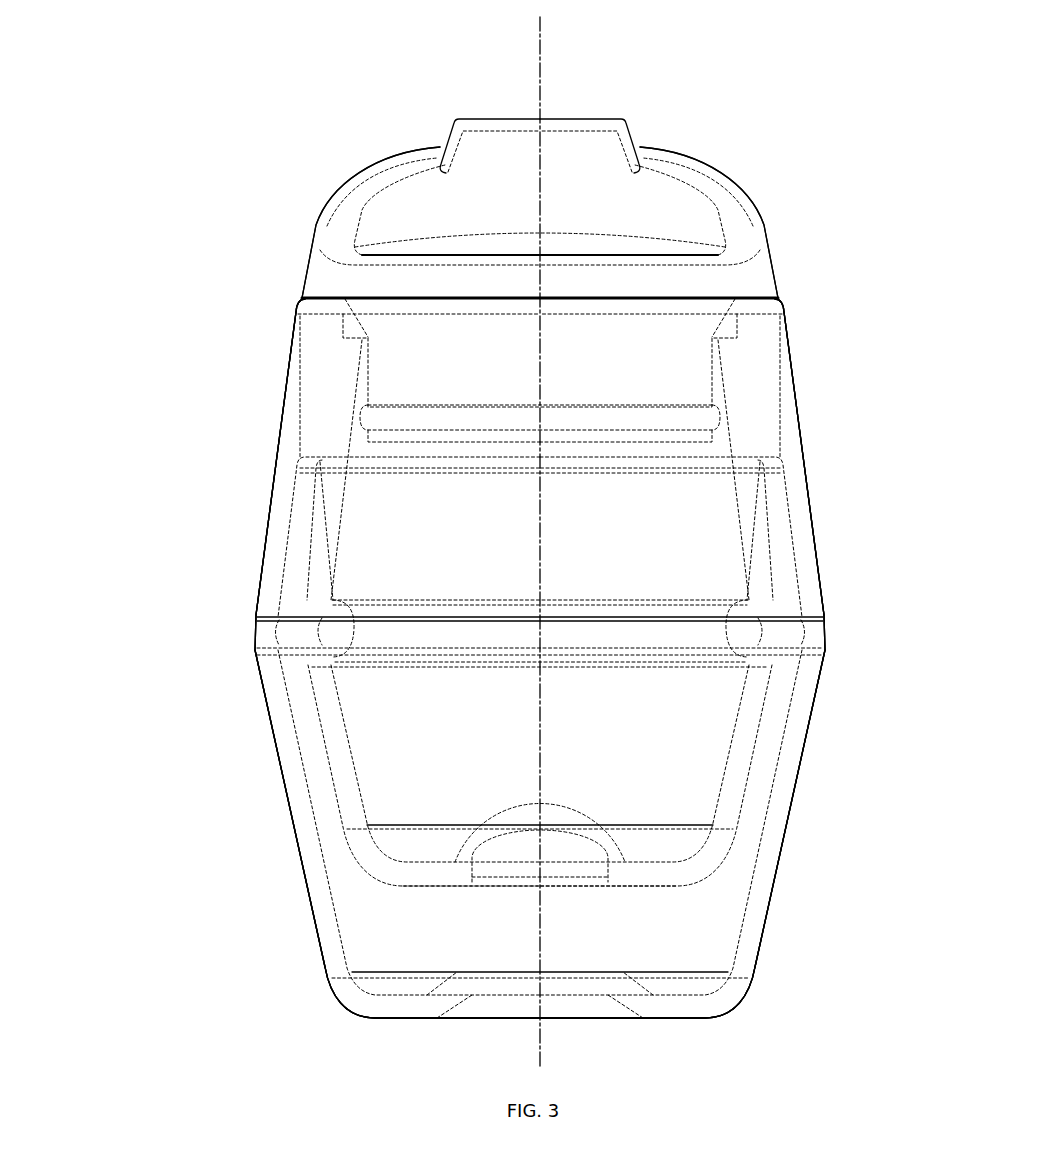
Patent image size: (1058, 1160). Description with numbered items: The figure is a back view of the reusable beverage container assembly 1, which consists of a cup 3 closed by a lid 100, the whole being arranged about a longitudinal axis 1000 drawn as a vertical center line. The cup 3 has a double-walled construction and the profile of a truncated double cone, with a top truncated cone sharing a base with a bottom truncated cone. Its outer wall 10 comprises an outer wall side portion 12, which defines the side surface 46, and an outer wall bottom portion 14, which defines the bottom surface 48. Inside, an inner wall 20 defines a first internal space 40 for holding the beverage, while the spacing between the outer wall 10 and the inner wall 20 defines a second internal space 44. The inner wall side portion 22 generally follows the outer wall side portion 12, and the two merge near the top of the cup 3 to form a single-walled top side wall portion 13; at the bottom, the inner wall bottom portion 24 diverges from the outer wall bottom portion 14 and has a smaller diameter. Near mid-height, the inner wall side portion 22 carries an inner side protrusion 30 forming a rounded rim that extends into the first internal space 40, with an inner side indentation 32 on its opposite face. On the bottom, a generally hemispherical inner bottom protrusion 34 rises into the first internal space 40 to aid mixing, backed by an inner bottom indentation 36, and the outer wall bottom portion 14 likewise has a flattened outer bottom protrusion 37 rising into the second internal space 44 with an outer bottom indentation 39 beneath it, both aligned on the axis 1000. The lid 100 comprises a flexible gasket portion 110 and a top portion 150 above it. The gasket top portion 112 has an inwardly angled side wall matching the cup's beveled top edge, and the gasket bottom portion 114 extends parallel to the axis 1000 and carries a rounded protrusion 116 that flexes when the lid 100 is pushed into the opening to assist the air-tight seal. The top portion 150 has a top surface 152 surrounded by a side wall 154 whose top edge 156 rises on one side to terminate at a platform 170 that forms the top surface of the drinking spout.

The longitudinal axis 1000 is at (540, 43).
The beverage container assembly 1 is at (185, 452).
The cup 3 is at (263, 568).
The outer wall 10 is at (290, 740).
The outer wall side portion 12 is at (292, 786).
The top side wall portion 13 is at (308, 360).
The outer wall bottom portion 14 is at (380, 1008).
The inner wall 20 is at (752, 517).
The inner wall side portion 22 is at (748, 702).
The inner wall bottom portion 24 is at (657, 887).
The inner side protrusion 30 is at (707, 647).
The inner side indentation 32 is at (745, 648).
The inner bottom protrusion 34 is at (603, 820).
The inner bottom indentation 36 is at (487, 848).
The outer bottom protrusion 37 is at (582, 968).
The outer bottom indentation 39 is at (565, 995).
The first internal space 40 is at (565, 575).
The second internal space 44 is at (300, 538).
The side surface 46 is at (285, 395).
The bottom surface 48 is at (393, 1019).
The lid 100 is at (315, 225).
The gasket portion 110 is at (712, 364).
The gasket top portion 112 is at (360, 312).
The gasket bottom portion 114 is at (680, 388).
The protrusion 116 is at (372, 415).
The top portion 150 is at (755, 212).
The top surface 152 is at (462, 242).
The side wall 154 is at (748, 272).
The top edge 156 is at (705, 167).
The platform 170 is at (578, 118).